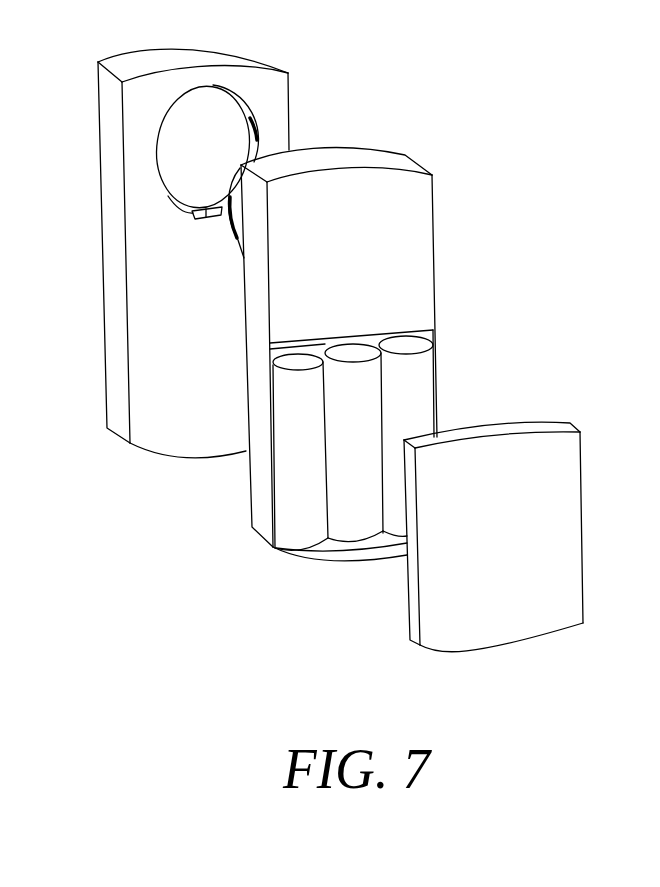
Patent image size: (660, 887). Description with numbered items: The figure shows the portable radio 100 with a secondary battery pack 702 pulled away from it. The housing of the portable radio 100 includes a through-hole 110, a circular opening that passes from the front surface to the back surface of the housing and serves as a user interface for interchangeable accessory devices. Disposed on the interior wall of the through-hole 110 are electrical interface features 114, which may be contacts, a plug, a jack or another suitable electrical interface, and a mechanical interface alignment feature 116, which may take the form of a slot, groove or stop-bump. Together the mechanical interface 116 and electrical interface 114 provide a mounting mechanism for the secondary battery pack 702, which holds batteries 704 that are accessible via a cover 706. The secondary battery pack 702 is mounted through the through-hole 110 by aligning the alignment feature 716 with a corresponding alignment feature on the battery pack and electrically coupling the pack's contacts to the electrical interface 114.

The portable radio 100 is at (116, 434).
The through-hole 110 is at (249, 111).
The electrical interface features 114 is at (193, 213).
The mechanical interface alignment feature 116 is at (252, 130).
The secondary battery pack 702 is at (433, 205).
The batteries 704 is at (424, 389).
The cover 706 is at (583, 508).
The alignment feature 716 is at (228, 227).